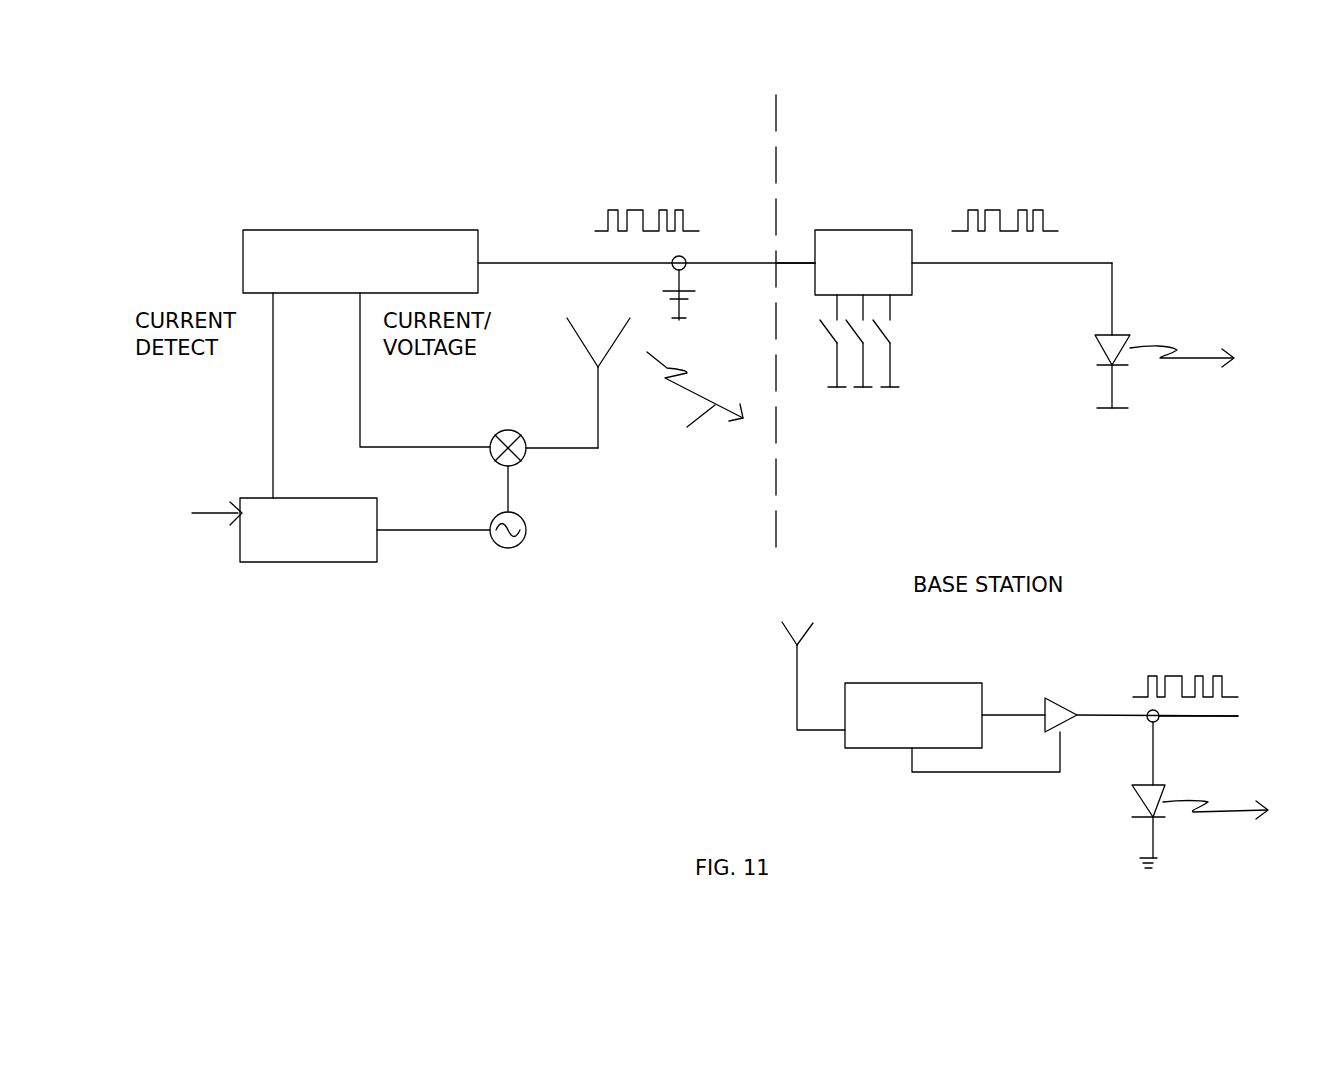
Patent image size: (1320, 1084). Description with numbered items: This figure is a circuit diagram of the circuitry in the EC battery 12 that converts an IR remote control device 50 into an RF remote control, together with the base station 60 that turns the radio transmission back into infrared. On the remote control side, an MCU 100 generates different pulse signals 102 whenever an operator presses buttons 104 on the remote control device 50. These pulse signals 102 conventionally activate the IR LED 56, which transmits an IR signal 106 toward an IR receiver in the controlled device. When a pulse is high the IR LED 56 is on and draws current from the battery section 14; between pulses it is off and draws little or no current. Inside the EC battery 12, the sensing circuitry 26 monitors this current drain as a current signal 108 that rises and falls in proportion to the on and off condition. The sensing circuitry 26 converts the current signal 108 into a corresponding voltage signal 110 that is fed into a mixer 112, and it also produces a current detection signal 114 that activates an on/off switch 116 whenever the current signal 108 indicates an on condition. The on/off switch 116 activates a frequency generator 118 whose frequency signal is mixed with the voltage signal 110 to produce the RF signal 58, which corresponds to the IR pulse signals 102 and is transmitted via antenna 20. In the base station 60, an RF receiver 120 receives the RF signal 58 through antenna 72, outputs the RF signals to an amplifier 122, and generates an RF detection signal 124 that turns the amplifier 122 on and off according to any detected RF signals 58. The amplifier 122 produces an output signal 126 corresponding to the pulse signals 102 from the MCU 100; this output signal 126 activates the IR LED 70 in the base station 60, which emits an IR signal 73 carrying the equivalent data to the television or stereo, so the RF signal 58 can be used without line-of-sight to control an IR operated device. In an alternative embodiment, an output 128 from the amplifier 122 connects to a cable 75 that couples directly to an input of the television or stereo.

The EC battery 12 is at (757, 119).
The remote control device 50 is at (795, 119).
The sensing circuitry 26 is at (282, 230).
The battery section 14 is at (675, 291).
The current signal 108 is at (680, 208).
The current detection signal 114 is at (273, 438).
The voltage signal 110 is at (360, 424).
The on/off switch 116 is at (275, 562).
The mixer 112 is at (517, 427).
The frequency generator 118 is at (525, 538).
The antenna 20 is at (585, 343).
The RF signal 58 is at (695, 405).
The MCU 100 is at (867, 227).
The pulse signals 102 is at (998, 208).
The buttons 104 is at (892, 330).
The IR LED 56 is at (1120, 333).
The IR signal 106 is at (1193, 362).
The base station 60 is at (813, 799).
The antenna 72 is at (807, 637).
The RF receiver 120 is at (882, 680).
The amplifier 122 is at (1065, 697).
The RF detection signal 124 is at (990, 773).
The output signal 126 is at (1175, 675).
The output 128 is at (1158, 720).
The cable 75 is at (1218, 717).
The IR LED 70 is at (1157, 785).
The IR signal 73 is at (1227, 817).